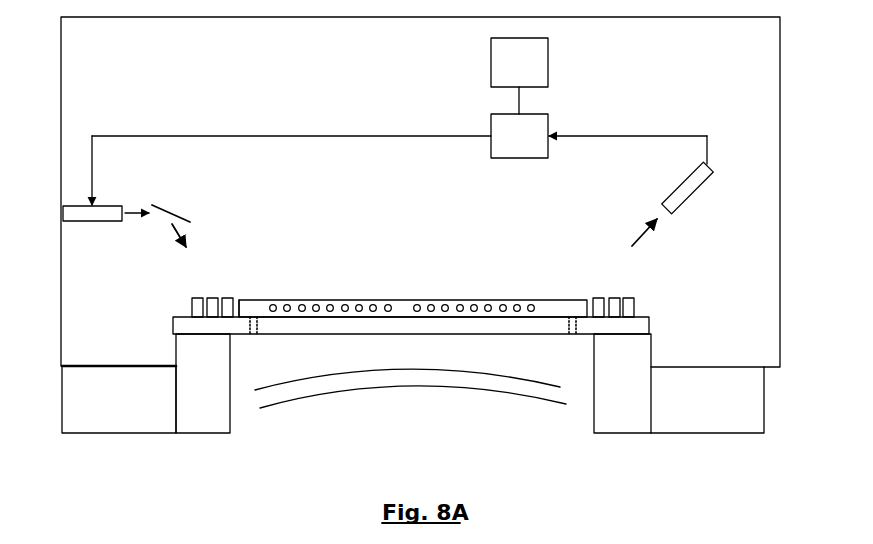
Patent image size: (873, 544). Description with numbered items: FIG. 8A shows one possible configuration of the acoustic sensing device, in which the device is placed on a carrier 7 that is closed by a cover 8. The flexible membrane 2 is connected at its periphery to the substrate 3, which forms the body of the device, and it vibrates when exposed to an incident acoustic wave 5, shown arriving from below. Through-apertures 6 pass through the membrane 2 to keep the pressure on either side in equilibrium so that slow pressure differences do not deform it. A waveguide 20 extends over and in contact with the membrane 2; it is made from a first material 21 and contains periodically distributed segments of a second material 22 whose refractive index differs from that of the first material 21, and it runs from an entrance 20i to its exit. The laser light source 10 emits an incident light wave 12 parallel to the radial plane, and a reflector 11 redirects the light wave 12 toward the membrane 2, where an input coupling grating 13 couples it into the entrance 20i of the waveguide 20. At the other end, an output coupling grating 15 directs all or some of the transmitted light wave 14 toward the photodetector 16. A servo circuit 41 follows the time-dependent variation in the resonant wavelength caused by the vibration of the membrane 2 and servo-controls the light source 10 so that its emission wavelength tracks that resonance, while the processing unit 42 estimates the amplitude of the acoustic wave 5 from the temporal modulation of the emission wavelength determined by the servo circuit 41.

The cover 8 is at (618, 22).
The carrier 7 is at (120, 403).
The substrate 3 is at (204, 418).
The flexible membrane 2 is at (548, 334).
The through-apertures 6 is at (254, 337).
The incident acoustic wave 5 is at (404, 392).
The waveguide 20 is at (298, 297).
The entrance of the waveguide 20i is at (268, 543).
The first material 21 is at (518, 302).
The segments of a second material 22 is at (405, 300).
The input coupling grating 13 is at (212, 295).
The output coupling grating 15 is at (615, 295).
The light source 10 is at (86, 205).
The reflector 11 is at (178, 206).
The incident light wave 12 is at (166, 237).
The transmitted light wave 14 is at (637, 232).
The photodetector 16 is at (676, 194).
The servo circuit 41 is at (541, 131).
The processing unit 42 is at (546, 50).